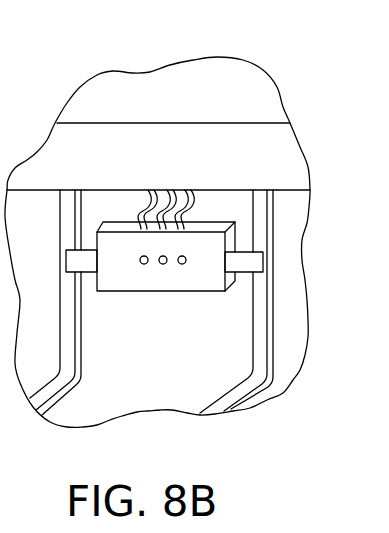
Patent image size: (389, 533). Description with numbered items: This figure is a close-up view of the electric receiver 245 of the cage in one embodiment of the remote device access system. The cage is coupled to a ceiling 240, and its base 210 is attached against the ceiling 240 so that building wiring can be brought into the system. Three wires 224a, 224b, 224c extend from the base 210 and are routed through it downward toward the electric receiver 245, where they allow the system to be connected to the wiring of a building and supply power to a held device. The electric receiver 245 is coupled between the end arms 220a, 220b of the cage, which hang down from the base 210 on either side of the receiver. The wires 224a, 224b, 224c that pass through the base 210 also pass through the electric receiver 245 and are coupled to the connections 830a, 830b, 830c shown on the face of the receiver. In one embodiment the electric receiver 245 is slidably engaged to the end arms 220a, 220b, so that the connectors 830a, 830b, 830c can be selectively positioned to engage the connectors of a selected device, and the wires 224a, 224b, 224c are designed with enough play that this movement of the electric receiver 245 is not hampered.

The ceiling 240 is at (262, 107).
The base 210 is at (283, 150).
The wire 224a is at (146, 212).
The wire 224b is at (160, 197).
The wire 224c is at (193, 210).
The connection 830a is at (140, 263).
The connection 830b is at (162, 264).
The connection 830c is at (185, 263).
The electric receiver 245 is at (212, 265).
The end arm 220a is at (67, 370).
The end arm 220b is at (260, 365).